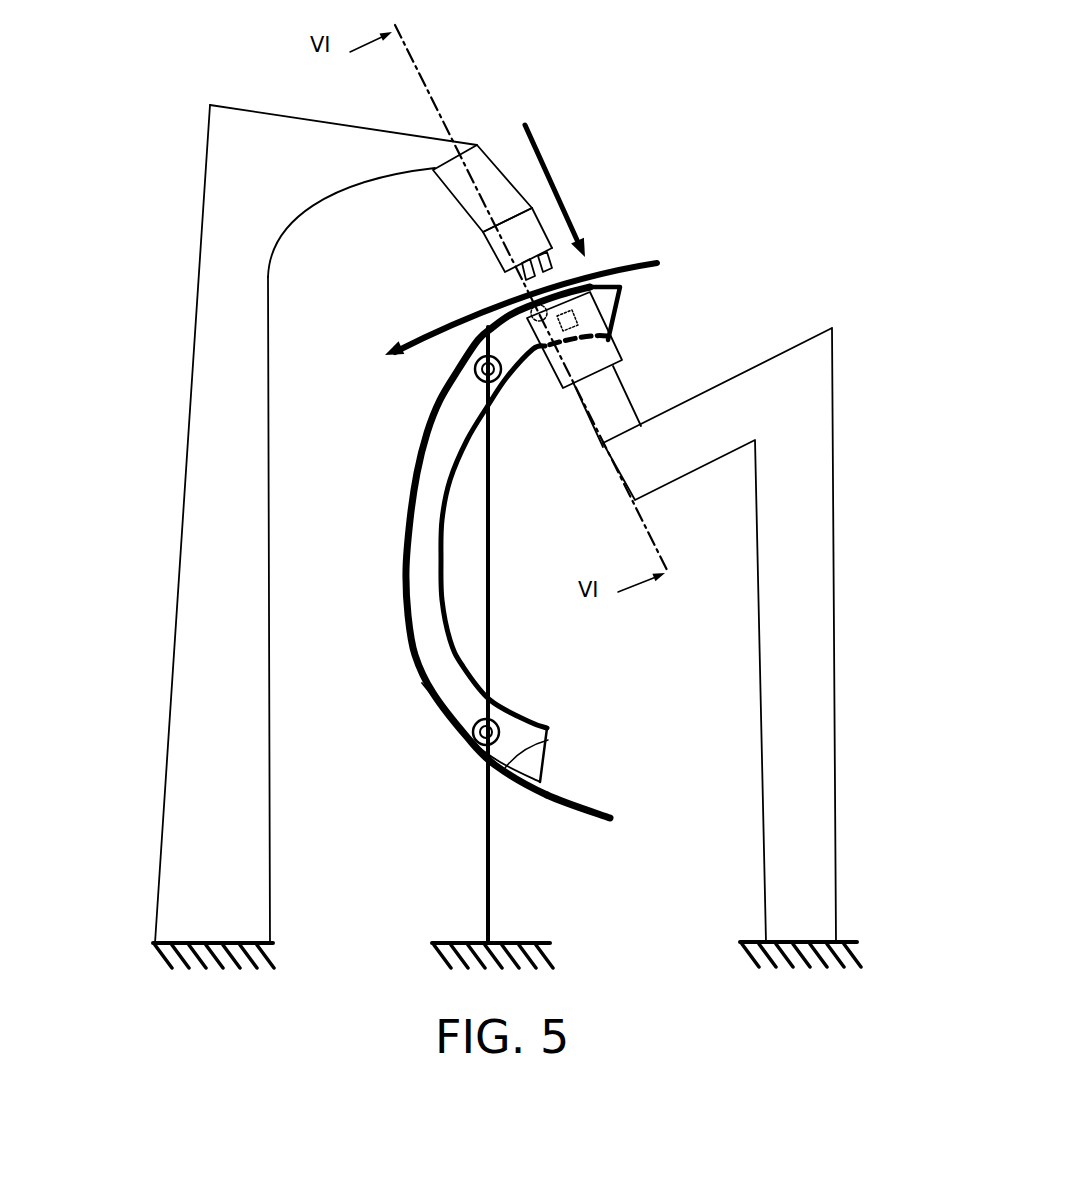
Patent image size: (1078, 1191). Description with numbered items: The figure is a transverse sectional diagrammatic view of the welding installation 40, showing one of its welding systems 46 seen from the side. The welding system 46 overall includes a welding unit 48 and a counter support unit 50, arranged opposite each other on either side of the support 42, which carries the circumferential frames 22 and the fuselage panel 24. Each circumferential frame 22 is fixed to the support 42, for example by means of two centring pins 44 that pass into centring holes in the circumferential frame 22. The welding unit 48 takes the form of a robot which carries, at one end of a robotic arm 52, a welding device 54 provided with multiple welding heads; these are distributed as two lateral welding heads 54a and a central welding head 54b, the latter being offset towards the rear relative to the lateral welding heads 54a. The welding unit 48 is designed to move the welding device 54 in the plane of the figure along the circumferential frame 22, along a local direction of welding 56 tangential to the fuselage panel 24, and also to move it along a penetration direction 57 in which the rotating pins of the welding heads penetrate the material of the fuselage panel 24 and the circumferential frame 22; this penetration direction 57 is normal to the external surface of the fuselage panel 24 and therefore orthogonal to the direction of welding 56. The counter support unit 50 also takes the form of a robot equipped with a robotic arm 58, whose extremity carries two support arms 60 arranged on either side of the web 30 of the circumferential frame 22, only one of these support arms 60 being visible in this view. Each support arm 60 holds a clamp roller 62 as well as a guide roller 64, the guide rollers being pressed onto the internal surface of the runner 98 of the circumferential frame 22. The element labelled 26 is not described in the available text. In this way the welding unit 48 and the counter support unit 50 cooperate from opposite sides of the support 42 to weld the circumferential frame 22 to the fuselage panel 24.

The circumferential frame 22 is at (565, 752).
The fuselage panel 24 is at (610, 820).
The sheet edge portion 26 is at (548, 740).
The web 30 is at (428, 602).
The welding installation 40 is at (730, 84).
The support 42 is at (490, 868).
The centring pins 44 is at (478, 372).
The welding system 46 is at (178, 308).
The welding unit 48 is at (235, 96).
The counter support unit 50 is at (821, 318).
The robotic arm 52 is at (477, 145).
The welding device 54 is at (482, 230).
The lateral welding heads 54a is at (520, 278).
The central welding head 54b is at (563, 236).
The direction of welding 56 is at (412, 330).
The penetration direction 57 is at (548, 155).
The robotic arm 58 is at (635, 407).
The support arms 60 is at (610, 355).
The clamp roller 62 is at (562, 300).
The guide roller 64 is at (576, 318).
The runner 98 is at (450, 505).